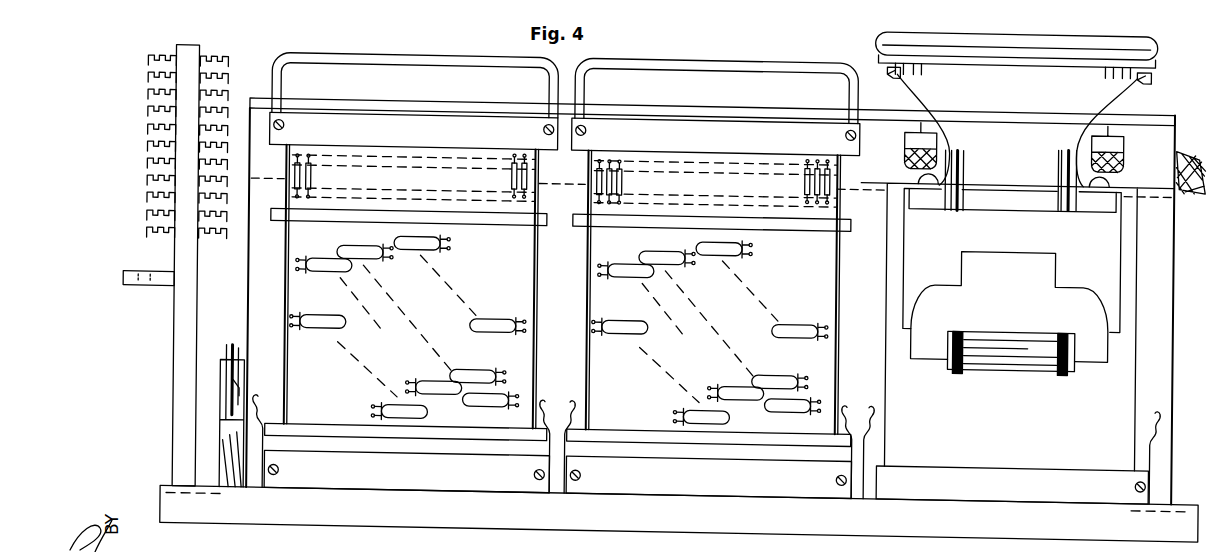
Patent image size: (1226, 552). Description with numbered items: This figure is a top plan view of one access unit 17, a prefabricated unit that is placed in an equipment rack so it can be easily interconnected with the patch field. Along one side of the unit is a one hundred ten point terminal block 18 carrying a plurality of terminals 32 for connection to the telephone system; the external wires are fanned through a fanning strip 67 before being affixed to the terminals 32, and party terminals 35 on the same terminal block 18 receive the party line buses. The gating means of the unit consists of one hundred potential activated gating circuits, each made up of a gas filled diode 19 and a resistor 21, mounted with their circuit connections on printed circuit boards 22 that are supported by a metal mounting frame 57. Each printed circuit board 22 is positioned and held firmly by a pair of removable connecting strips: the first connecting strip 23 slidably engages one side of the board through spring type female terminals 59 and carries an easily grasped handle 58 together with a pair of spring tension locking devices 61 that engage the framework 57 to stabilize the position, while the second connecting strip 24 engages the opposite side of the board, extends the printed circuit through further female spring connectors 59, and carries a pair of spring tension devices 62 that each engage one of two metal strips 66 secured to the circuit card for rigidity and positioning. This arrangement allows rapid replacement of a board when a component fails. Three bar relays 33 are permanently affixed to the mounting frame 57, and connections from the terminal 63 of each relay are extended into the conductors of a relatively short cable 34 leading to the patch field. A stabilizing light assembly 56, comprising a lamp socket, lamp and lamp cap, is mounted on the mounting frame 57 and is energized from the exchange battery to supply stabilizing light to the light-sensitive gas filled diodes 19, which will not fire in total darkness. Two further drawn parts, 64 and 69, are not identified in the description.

The access unit 17 is at (262, 521).
The terminal block 18 is at (190, 46).
The gas filled diode 19 is at (340, 244).
The resistor 21 is at (314, 176).
The printed circuit board 22 is at (531, 257).
The first connecting strip 23 is at (365, 122).
The second connecting strip 24 is at (348, 480).
The terminals 32 is at (149, 61).
The bar relay 33 is at (930, 345).
The cable 34 is at (1189, 134).
The party terminals 35 is at (148, 234).
The stabilizing light assembly 56 is at (236, 340).
The mounting frame 57 is at (1172, 353).
The handle 58 is at (380, 53).
The spring type female terminals 59 is at (925, 55).
The spring tension locking devices 61 is at (1150, 63).
The spring tension devices 62 is at (868, 369).
The terminal 63 is at (965, 158).
The capacitor 64 is at (990, 355).
The metal strips 66 is at (471, 219).
The fanning strip 67 is at (142, 288).
The top rail 69 is at (1165, 100).